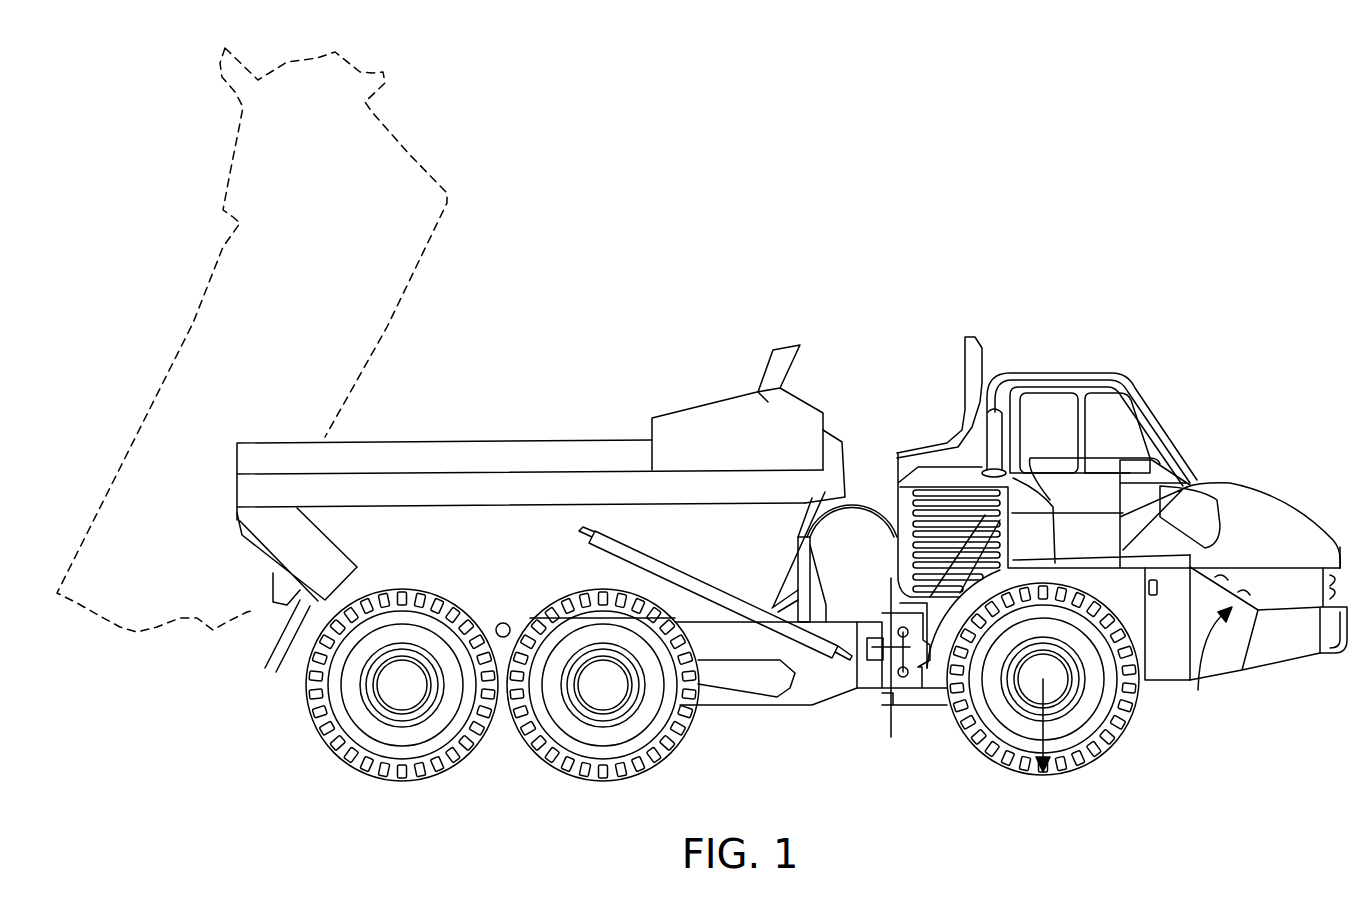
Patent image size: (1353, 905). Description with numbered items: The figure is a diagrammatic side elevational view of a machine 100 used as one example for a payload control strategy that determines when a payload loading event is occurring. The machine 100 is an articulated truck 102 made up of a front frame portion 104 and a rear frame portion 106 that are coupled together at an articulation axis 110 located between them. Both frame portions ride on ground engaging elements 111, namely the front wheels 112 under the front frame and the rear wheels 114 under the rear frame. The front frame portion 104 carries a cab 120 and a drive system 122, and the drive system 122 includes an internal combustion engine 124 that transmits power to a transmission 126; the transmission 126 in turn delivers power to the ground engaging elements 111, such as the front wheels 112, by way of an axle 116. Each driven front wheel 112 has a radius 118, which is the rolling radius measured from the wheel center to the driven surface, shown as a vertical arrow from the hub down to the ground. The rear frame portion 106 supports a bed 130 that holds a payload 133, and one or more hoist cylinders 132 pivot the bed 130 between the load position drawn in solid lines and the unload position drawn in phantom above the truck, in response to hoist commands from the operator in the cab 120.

The machine 100 is at (679, 348).
The articulated truck 102 is at (914, 348).
The front frame portion 104 is at (1209, 672).
The rear frame portion 106 is at (808, 668).
The articulation axis 110 is at (893, 720).
The ground engaging elements 111 is at (420, 778).
The front wheels 112 is at (985, 672).
The rear wheels 114 is at (317, 703).
The axle 116 is at (1040, 680).
The radius 118 is at (1047, 727).
The cab 120 is at (1170, 422).
The drive system 122 is at (1235, 637).
The internal combustion engine 124 is at (1267, 520).
The transmission 126 is at (1172, 660).
The bed 130 is at (492, 440).
The hoist cylinders 132 is at (676, 573).
The payload 133 is at (553, 440).